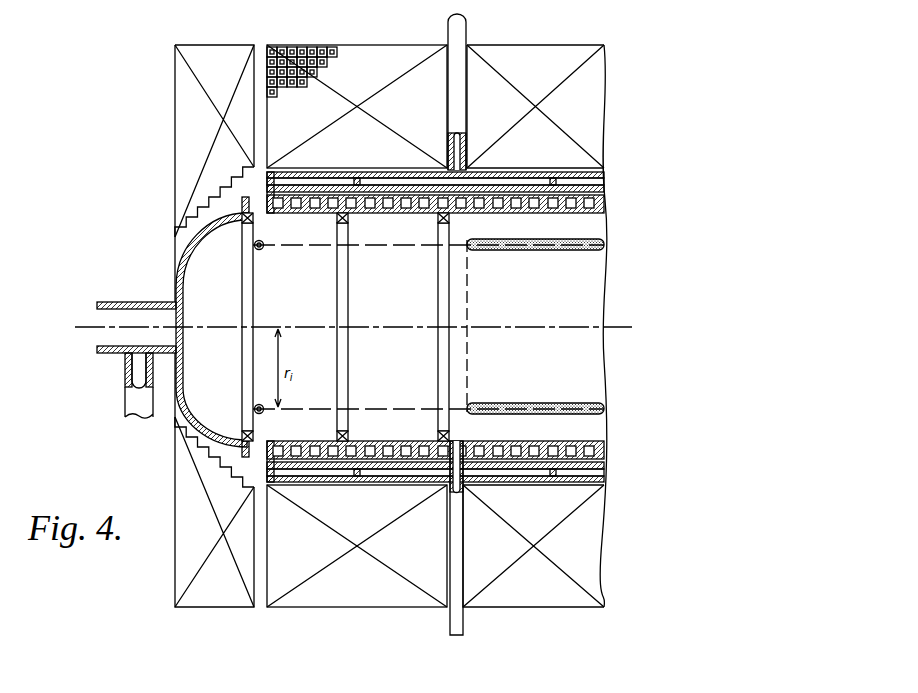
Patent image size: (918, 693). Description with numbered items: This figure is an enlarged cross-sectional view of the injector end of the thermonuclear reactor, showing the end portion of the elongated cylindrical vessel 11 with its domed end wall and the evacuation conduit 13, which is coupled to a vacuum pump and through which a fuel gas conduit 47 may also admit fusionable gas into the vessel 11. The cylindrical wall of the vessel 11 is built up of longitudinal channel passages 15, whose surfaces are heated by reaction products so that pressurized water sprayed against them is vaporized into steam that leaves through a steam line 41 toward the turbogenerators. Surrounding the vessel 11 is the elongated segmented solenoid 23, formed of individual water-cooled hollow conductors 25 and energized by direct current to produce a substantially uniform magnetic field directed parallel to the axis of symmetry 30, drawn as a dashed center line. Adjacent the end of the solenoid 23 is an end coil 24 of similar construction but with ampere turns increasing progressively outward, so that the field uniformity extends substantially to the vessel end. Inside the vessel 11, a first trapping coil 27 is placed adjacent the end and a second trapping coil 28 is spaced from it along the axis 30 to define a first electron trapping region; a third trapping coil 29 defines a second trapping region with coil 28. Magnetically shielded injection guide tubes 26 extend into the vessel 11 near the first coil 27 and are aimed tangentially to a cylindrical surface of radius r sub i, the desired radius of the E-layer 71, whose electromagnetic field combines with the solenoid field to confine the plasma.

The cylindrical vessel 11 is at (178, 249).
The evacuation conduit 13 is at (141, 302).
The channel passages 15 is at (397, 213).
The segmented solenoid 23 is at (386, 47).
The end coil 24 is at (174, 147).
The hollow conductors 25 is at (313, 47).
The injection guide tubes 26 is at (262, 244).
The first trapping coil 27 is at (240, 295).
The second trapping coil 28 is at (337, 297).
The third trapping coil 29 is at (436, 295).
The axis of symmetry 30 is at (410, 328).
The steam line 41 is at (467, 30).
The fuel gas conduit 47 is at (449, 621).
The E-layer 71 is at (535, 417).